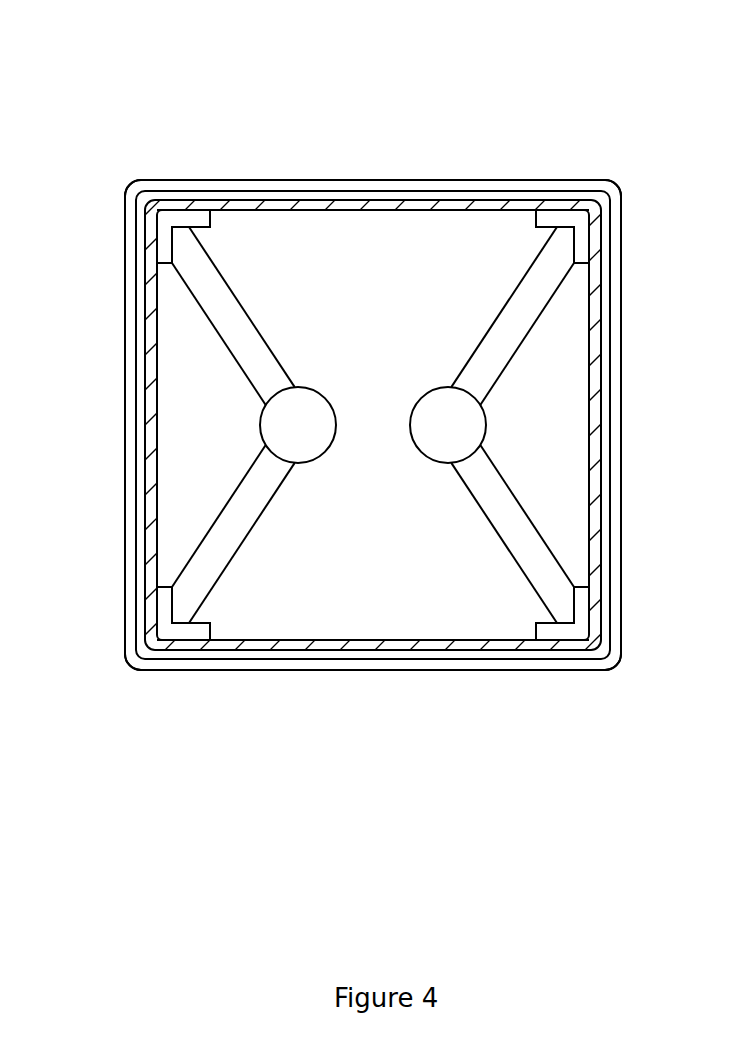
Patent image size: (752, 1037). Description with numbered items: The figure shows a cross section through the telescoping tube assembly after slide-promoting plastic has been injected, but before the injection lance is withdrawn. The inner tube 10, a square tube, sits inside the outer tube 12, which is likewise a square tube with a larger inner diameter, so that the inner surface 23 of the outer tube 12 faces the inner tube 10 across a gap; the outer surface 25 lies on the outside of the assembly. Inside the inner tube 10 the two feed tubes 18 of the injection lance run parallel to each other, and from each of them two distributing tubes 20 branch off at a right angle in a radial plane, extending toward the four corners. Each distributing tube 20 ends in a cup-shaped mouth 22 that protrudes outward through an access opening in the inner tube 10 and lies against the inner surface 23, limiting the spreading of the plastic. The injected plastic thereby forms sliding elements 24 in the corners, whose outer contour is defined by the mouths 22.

The inner tube 10 is at (270, 206).
The outer tube 12 is at (380, 190).
The feed tubes 18 is at (438, 412).
The distributing tubes 20 is at (235, 527).
The mouths 22 is at (172, 222).
The inner surface 23 is at (610, 272).
The sliding elements 24 is at (147, 242).
The outer surface 25 is at (474, 196).